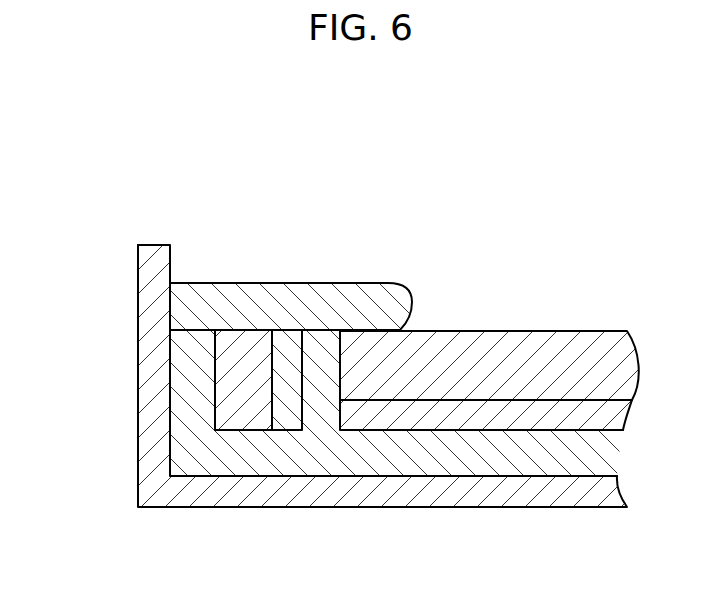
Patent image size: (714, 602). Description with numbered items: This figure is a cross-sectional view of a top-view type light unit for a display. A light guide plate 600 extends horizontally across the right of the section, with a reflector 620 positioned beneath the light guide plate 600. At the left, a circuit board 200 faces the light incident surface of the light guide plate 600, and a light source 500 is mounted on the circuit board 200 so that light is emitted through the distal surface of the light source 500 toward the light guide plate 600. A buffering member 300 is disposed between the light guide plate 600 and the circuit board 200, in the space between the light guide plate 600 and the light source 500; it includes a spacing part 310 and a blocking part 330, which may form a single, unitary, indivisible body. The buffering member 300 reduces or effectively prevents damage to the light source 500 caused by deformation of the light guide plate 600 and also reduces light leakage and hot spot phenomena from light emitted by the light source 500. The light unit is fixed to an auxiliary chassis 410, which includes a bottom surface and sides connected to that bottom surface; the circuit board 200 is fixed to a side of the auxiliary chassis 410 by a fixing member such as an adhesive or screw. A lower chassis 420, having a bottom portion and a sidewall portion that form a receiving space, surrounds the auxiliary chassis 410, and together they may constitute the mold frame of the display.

The circuit board 200 is at (247, 417).
The buffering member 300 is at (320, 379).
The spacing part 310 is at (323, 373).
The blocking part 330 is at (270, 307).
The auxiliary chassis 410 is at (437, 457).
The lower chassis 420 is at (188, 488).
The light source 500 is at (290, 422).
The light guide plate 600 is at (538, 348).
The reflector 620 is at (513, 420).